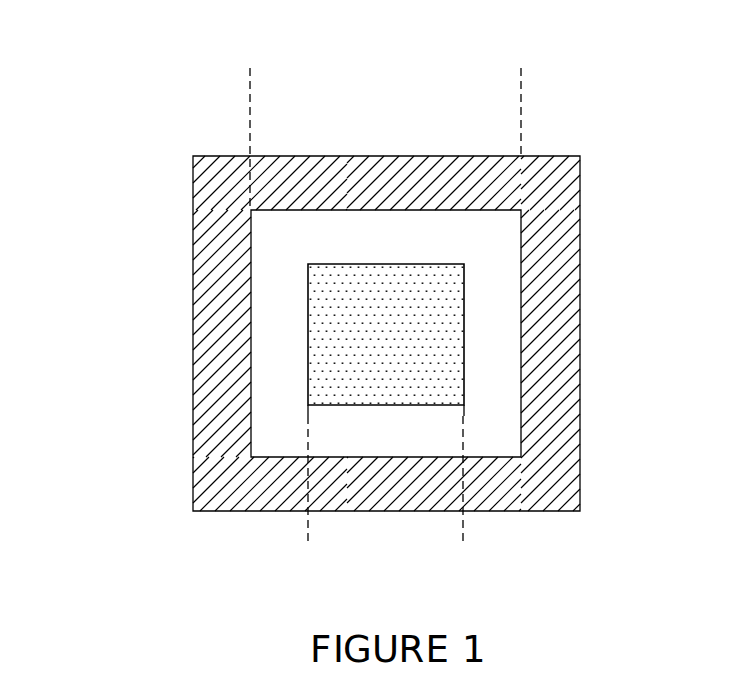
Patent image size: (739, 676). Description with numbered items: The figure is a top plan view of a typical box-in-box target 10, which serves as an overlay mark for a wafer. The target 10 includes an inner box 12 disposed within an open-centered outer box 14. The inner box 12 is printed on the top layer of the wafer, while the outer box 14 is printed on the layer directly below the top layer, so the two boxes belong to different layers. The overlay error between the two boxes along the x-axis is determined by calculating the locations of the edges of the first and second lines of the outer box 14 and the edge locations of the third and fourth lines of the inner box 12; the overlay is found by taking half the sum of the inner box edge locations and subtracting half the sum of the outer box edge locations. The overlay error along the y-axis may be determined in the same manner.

The box-in-box target 10 is at (146, 108).
The inner box 12 is at (350, 300).
The outer box 14 is at (580, 247).